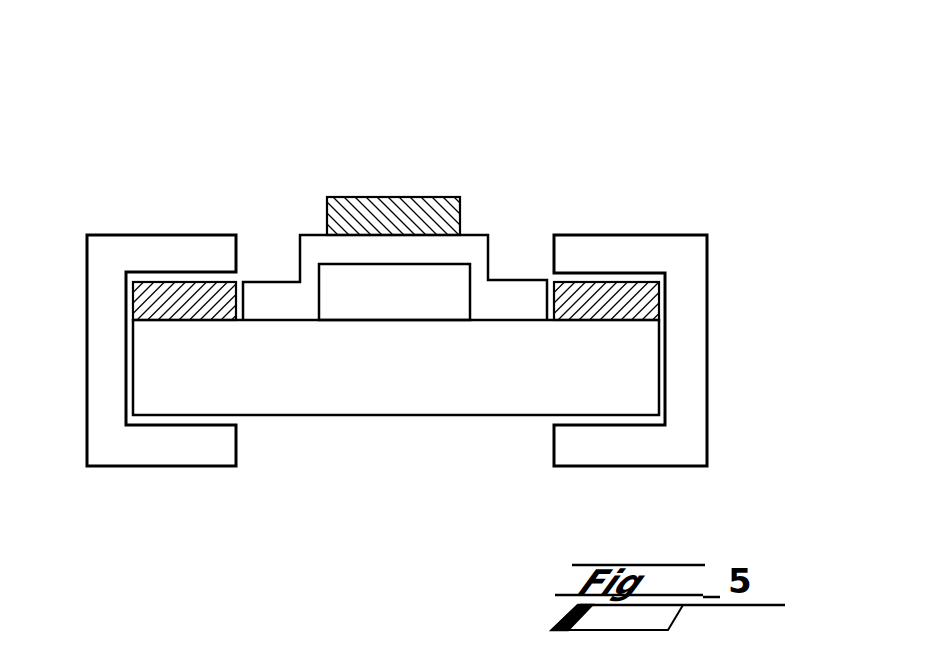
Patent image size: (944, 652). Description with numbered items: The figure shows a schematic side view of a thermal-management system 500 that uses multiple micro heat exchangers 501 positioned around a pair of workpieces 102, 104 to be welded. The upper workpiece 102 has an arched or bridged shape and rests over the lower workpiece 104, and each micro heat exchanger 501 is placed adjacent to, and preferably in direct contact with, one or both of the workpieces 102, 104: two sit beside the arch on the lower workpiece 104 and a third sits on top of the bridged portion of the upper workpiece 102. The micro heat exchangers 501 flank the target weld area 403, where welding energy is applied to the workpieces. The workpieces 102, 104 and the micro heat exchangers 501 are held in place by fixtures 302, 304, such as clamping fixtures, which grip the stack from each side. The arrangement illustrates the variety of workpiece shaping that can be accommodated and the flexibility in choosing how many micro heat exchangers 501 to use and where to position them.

The thermal-management system 500 is at (640, 58).
The top fixture 302 is at (130, 235).
The fixture 304 is at (671, 235).
The workpiece 104 is at (297, 415).
The upper workpiece 102 is at (403, 264).
The target weld area 403 is at (276, 272).
The micro heat exchangers 501 is at (190, 282).